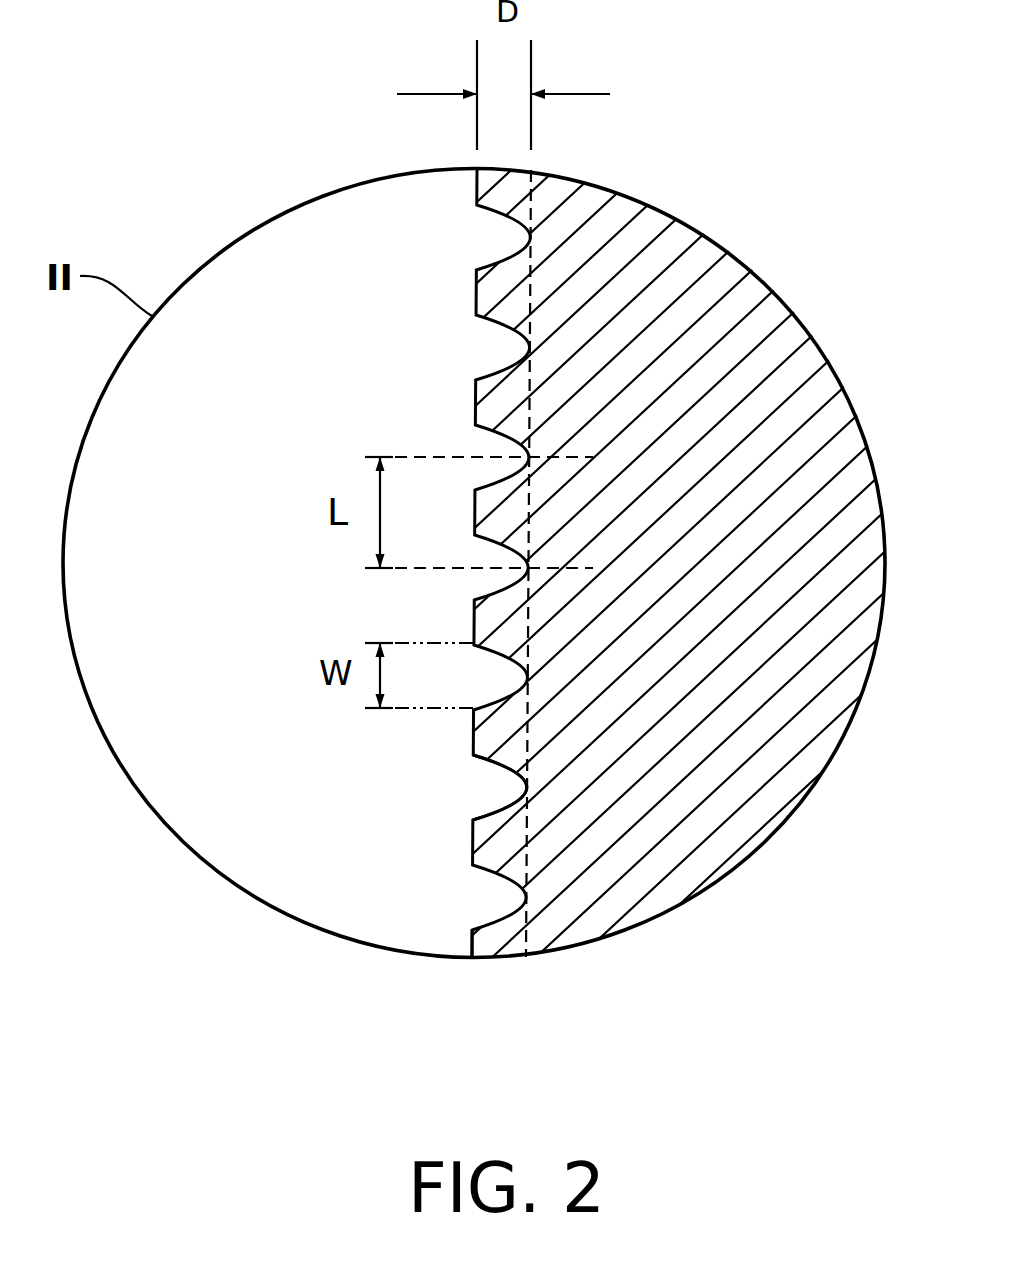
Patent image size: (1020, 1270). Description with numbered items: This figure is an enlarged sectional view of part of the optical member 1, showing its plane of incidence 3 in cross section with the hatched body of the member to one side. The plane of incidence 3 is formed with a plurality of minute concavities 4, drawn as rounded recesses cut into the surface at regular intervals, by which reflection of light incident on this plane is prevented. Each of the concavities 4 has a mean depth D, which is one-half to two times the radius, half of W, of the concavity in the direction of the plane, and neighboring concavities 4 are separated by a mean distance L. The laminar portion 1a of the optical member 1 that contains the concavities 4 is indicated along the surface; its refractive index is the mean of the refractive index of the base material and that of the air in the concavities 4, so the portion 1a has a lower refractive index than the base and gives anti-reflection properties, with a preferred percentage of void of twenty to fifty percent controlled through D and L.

The optical member 1 is at (730, 211).
The laminar portion 1a is at (525, 975).
The plane of incidence 3 is at (468, 742).
The minute concavities 4 is at (487, 922).